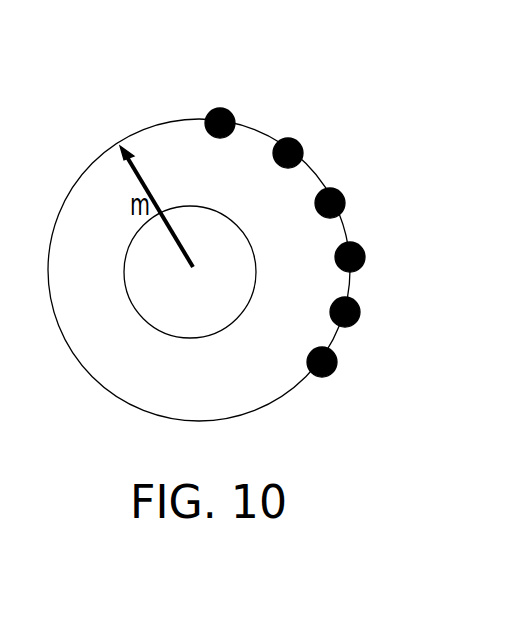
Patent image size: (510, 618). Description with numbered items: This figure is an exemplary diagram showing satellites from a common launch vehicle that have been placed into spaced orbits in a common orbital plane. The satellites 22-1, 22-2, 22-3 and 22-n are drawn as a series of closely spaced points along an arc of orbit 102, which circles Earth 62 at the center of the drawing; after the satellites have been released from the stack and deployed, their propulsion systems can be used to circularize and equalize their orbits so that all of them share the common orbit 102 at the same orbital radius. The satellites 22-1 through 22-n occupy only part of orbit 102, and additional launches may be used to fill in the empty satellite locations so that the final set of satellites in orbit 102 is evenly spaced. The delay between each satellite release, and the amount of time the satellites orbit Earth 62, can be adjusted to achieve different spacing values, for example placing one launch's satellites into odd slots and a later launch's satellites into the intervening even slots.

The satellite 22-1 is at (255, 106).
The satellite 22-2 is at (323, 138).
The satellite 22-3 is at (364, 187).
The satellite 22-n is at (360, 362).
The Earth 62 is at (190, 272).
The orbit 102 is at (292, 392).